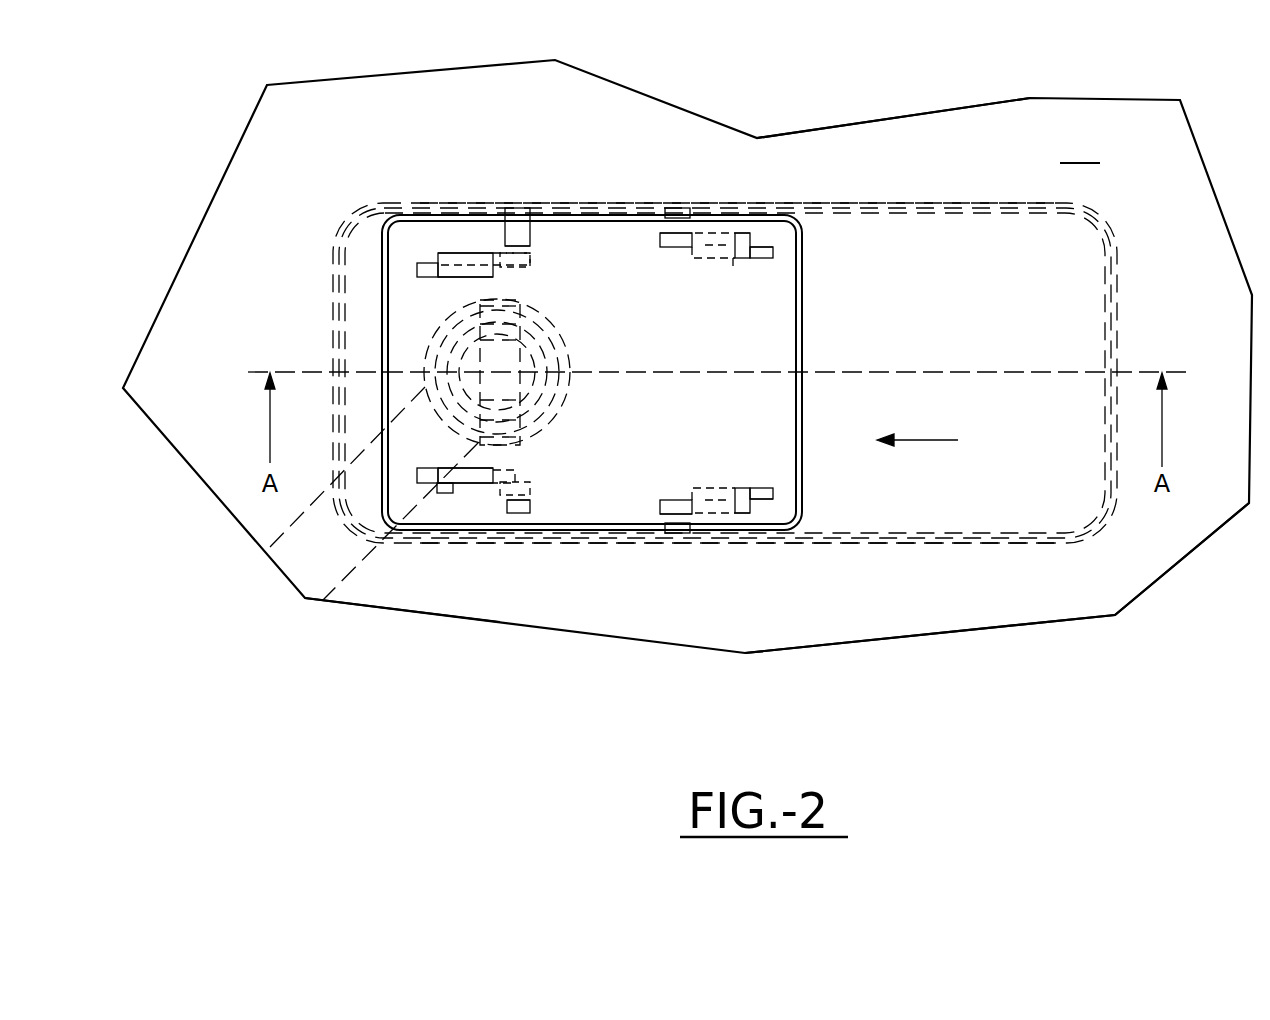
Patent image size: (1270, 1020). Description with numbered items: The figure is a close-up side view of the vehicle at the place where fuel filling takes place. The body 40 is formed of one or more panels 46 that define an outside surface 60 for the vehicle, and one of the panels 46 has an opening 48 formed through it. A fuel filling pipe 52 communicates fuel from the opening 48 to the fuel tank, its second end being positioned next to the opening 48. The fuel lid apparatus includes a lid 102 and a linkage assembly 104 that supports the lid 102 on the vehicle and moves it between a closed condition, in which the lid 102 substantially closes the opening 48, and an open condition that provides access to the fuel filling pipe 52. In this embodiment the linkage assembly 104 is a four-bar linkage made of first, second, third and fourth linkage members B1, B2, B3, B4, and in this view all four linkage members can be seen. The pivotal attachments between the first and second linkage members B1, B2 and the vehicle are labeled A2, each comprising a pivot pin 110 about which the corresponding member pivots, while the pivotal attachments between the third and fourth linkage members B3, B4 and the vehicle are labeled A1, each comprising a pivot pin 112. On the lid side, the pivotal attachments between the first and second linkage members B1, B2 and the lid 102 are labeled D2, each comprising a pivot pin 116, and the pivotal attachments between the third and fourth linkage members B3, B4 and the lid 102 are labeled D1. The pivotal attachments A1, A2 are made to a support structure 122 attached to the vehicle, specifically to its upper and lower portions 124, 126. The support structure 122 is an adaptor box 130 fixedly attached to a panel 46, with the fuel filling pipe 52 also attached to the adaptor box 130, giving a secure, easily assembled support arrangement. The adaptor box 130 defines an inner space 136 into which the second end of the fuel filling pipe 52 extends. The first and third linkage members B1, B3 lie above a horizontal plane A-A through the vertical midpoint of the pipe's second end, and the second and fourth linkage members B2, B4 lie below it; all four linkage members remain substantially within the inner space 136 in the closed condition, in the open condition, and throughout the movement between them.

The body 40 is at (1178, 162).
The panel 46 is at (985, 128).
The opening 48 is at (795, 286).
The fuel filling pipe 52 is at (338, 548).
The outside surface 60 is at (1080, 151).
The lid 102 is at (778, 316).
The linkage assembly 104 is at (942, 440).
The pivot pin 110 is at (527, 237).
The pivot pin 112 is at (677, 228).
The pivot pin 116 is at (450, 253).
The support structure 122 is at (1117, 317).
The upper portion 124 is at (593, 220).
The lower portion 126 is at (607, 543).
The adaptor box 130 is at (1027, 545).
The inner space 136 is at (952, 533).
The pivotal attachment A1 is at (673, 210).
The pivotal attachment A2 is at (515, 228).
The first linkage member B1 is at (468, 253).
The second linkage member B2 is at (472, 495).
The third linkage member B3 is at (730, 233).
The fourth linkage member B4 is at (728, 513).
The pivotal attachment D1 is at (733, 272).
The pivotal attachment D2 is at (445, 277).